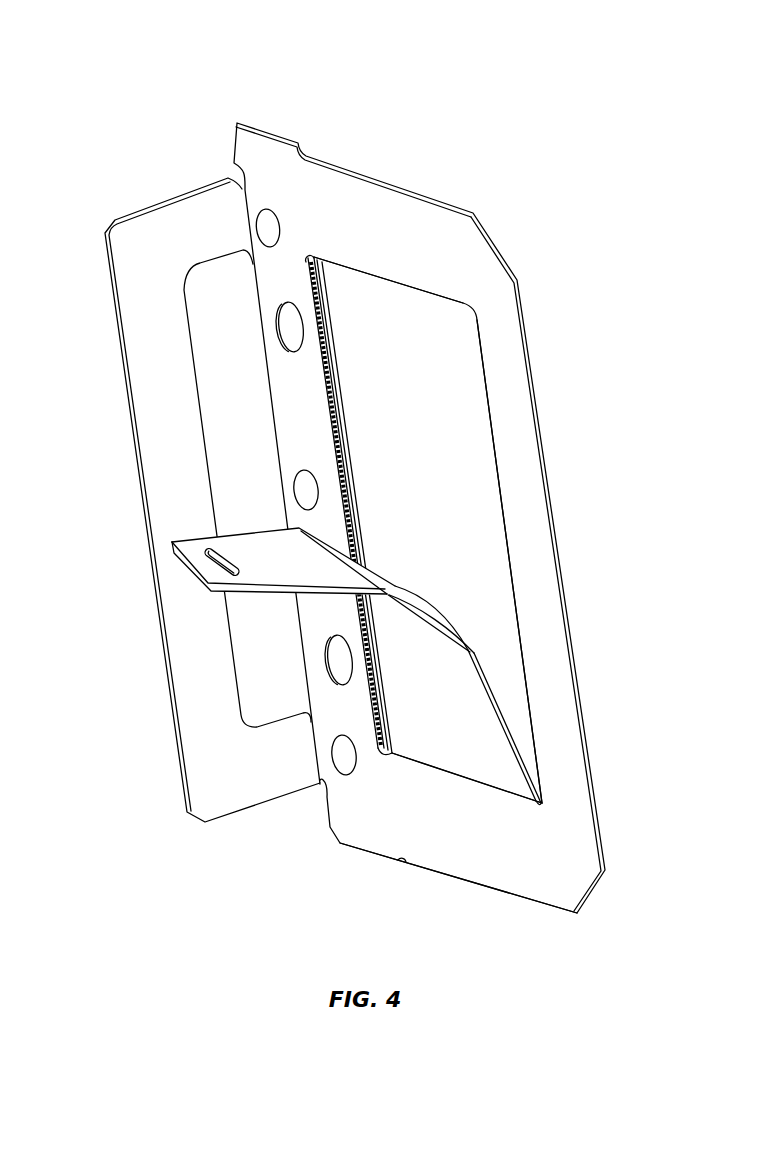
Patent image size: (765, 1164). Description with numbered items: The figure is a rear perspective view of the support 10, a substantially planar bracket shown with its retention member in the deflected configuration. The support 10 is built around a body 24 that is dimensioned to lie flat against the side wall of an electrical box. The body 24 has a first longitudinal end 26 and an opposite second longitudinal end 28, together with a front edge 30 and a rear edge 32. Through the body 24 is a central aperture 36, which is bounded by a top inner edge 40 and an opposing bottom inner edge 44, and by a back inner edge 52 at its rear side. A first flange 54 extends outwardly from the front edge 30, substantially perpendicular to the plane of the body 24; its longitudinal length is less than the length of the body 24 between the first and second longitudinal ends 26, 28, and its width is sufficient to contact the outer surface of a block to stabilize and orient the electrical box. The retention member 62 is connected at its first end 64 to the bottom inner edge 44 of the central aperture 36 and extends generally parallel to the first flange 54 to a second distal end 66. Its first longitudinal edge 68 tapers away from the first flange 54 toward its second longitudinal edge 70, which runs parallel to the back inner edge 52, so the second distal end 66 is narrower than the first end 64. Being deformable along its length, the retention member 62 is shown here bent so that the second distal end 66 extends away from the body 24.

The support 10 is at (391, 100).
The body 24 is at (433, 238).
The first longitudinal end 26 is at (381, 182).
The second longitudinal end 28 is at (452, 878).
The front edge 30 is at (268, 410).
The rear edge 32 is at (556, 521).
The central aperture 36 is at (392, 433).
The top inner edge 40 is at (397, 282).
The bottom inner edge 44 is at (389, 754).
The back inner edge 52 is at (492, 441).
The first flange 54 is at (127, 278).
The retention member 62 is at (457, 692).
The first end 64 is at (485, 786).
The second distal end 66 is at (190, 568).
The first longitudinal edge 68 is at (247, 533).
The second longitudinal edge 70 is at (443, 607).